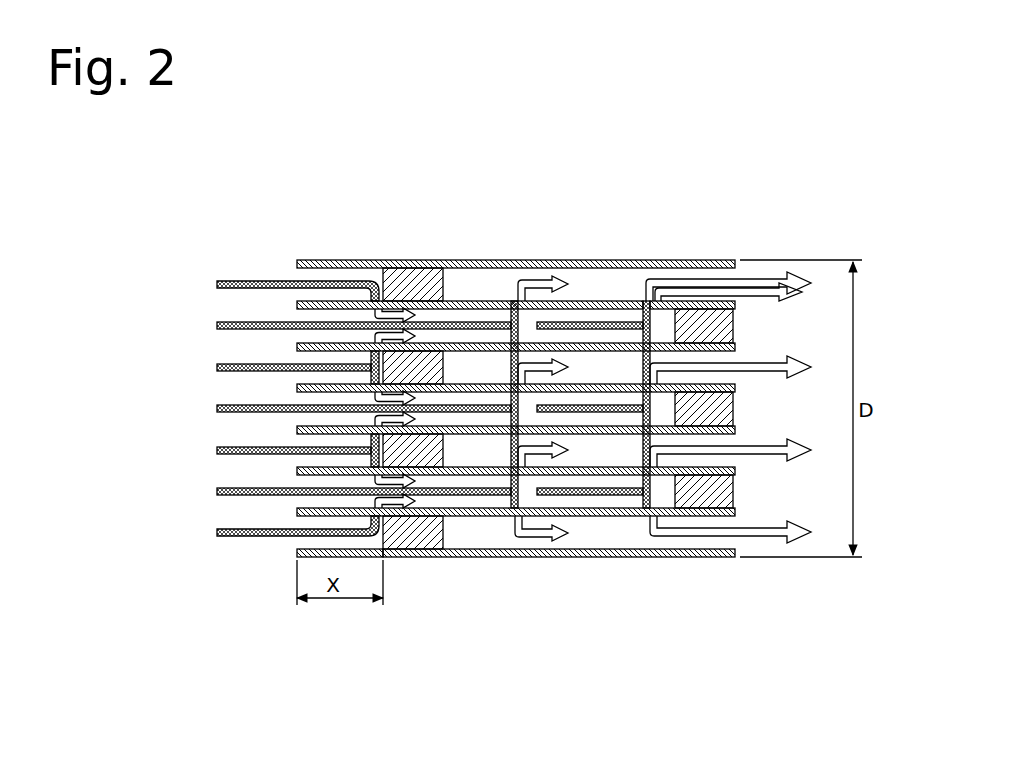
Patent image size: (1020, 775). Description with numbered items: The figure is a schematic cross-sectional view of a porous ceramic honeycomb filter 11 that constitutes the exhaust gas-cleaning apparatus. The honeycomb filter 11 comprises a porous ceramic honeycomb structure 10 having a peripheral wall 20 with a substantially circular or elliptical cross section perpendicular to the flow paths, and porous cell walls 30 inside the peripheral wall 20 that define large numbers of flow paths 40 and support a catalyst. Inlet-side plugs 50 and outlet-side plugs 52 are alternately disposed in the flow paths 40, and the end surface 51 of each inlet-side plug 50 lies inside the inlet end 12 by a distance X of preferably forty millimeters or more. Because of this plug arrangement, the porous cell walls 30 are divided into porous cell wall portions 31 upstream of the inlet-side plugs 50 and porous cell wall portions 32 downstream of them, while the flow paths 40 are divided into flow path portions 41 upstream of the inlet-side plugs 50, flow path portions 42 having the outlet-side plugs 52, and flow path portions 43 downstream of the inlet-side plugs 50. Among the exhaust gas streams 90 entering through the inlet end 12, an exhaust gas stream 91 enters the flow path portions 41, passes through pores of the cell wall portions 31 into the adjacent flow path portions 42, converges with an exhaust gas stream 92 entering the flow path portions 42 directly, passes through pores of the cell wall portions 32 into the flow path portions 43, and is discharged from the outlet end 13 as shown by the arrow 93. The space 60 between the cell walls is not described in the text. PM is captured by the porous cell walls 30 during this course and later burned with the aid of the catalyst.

The porous ceramic honeycomb structure 10 is at (471, 256).
The porous ceramic honeycomb filter 11 is at (396, 211).
The inlet end 12 is at (297, 306).
The outlet end 13 is at (735, 306).
The peripheral wall 20 is at (531, 268).
The porous cell walls 30 is at (643, 261).
The porous cell wall portions 31 is at (338, 508).
The porous cell wall portions 32 is at (583, 506).
The flow paths 40 is at (482, 130).
The flow path portions 41 is at (374, 272).
The flow path portions 42 is at (496, 316).
The flow path portions 43 is at (626, 278).
The inlet-side plugs 50 is at (421, 540).
The end surface 51 is at (383, 556).
The outlet-side plugs 52 is at (698, 497).
The fluid passage 60 is at (597, 276).
The exhaust gas streams 90 is at (157, 254).
The exhaust gas stream 91 is at (217, 284).
The exhaust gas stream 92 is at (217, 326).
The arrow 93 is at (797, 277).